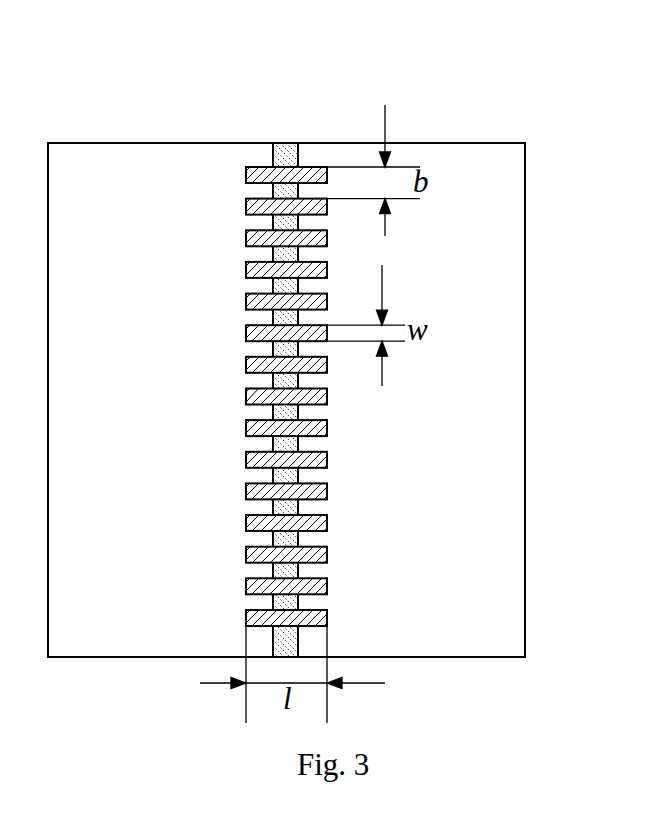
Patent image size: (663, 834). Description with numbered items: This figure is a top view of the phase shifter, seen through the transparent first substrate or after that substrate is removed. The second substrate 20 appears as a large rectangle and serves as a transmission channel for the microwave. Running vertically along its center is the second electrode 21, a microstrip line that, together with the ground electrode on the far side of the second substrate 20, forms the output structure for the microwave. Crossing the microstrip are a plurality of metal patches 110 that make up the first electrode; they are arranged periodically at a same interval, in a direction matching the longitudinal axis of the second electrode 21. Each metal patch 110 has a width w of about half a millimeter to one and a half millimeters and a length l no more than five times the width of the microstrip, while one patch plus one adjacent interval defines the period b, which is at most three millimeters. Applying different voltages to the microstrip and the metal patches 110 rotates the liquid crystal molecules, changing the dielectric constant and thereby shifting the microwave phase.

The second substrate 20 is at (456, 158).
The second electrode 21 is at (287, 160).
The metal patches 110 is at (273, 171).